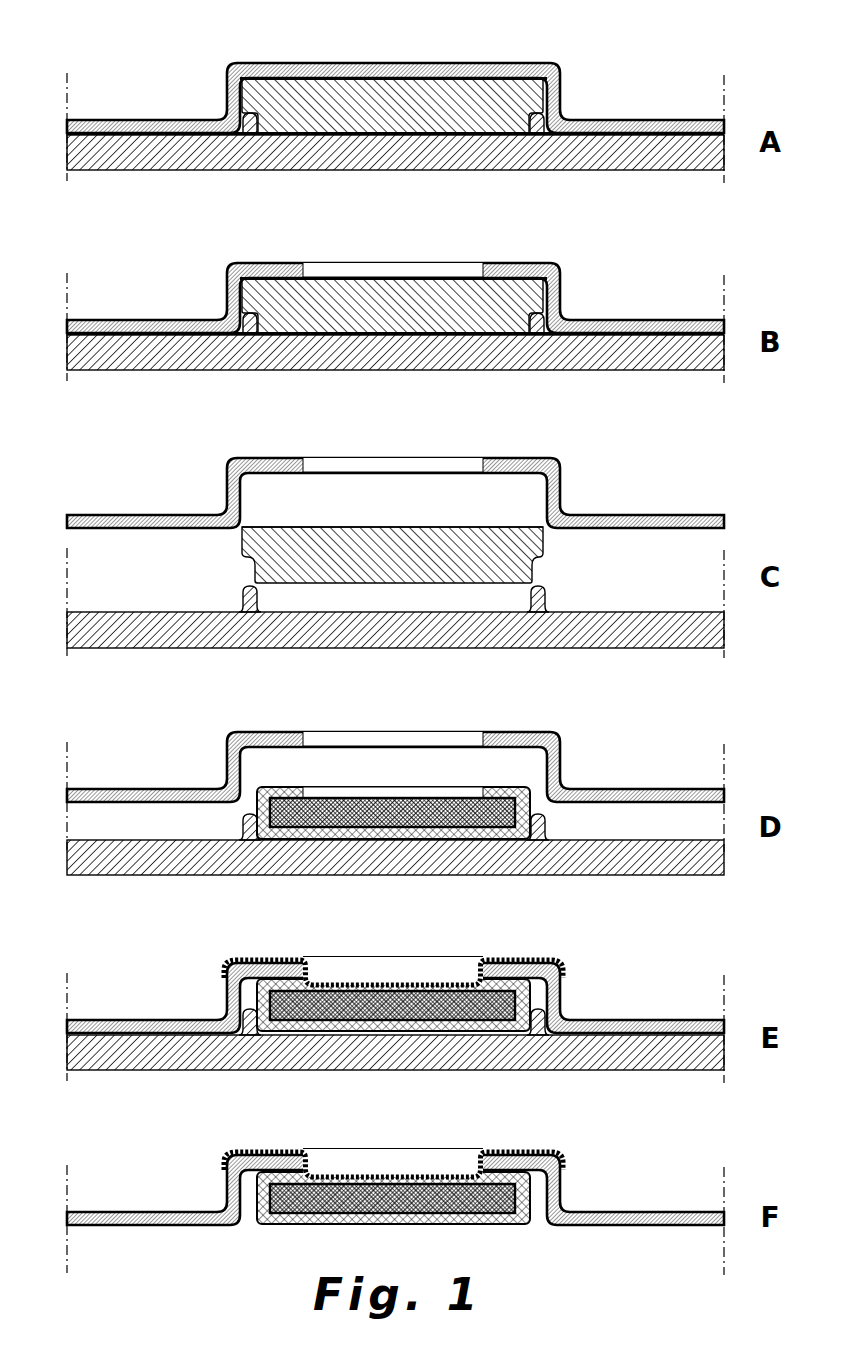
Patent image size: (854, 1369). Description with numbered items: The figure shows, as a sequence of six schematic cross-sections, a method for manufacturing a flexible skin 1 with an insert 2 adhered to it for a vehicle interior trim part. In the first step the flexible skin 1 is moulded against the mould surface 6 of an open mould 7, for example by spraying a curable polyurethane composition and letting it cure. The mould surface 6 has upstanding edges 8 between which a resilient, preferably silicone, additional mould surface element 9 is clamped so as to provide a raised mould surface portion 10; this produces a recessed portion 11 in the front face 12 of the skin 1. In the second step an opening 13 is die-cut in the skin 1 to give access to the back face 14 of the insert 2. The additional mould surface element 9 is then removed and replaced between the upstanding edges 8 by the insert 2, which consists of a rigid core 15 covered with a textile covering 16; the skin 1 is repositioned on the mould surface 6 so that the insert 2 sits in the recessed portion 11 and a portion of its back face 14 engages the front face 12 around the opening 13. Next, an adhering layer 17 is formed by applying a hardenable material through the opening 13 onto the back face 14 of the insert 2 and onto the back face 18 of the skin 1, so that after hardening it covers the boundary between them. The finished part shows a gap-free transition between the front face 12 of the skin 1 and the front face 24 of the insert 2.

The flexible skin 1 is at (560, 80).
The insert 2 is at (525, 777).
The mould surface 6 is at (598, 612).
The mould 7 is at (605, 150).
The upstanding edges 8 is at (250, 113).
The additional mould surface element 9 is at (393, 110).
The raised mould surface portion 10 is at (400, 525).
The recessed portion 11 is at (260, 483).
The front face of the skin 12 is at (108, 527).
The opening 13 is at (392, 270).
The back face of the insert 14 is at (380, 797).
The rigid core 15 is at (453, 798).
The textile covering 16 is at (260, 788).
The adhering layer 17 is at (360, 984).
The back face of the skin 18 is at (118, 513).
The front face of the insert 24 is at (495, 1222).